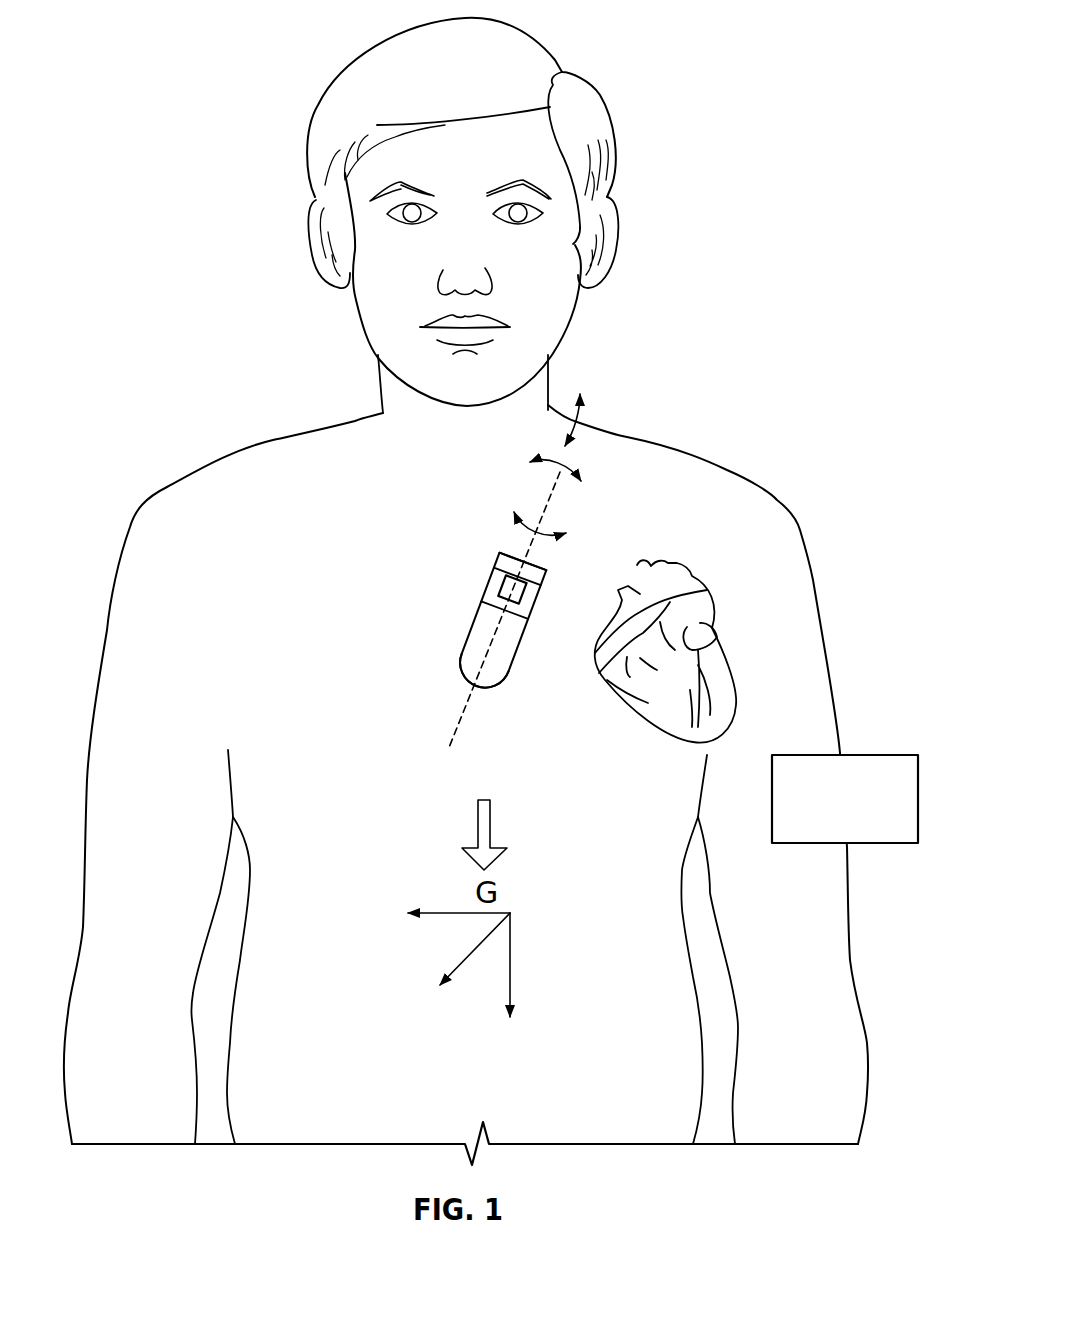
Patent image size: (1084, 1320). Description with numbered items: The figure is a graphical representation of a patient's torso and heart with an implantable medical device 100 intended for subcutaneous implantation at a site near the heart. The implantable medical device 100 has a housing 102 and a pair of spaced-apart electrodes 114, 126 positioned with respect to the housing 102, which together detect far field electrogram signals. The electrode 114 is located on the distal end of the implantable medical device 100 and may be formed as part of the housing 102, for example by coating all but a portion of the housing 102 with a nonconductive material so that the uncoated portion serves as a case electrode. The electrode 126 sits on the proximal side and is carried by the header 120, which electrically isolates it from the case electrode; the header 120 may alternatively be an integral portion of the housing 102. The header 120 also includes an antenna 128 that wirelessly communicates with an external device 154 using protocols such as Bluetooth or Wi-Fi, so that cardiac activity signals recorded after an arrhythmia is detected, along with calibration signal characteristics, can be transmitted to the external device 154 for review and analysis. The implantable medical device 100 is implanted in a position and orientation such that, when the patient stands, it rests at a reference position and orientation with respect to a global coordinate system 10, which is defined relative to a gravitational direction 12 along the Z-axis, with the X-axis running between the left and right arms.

The global coordinate system 10 is at (440, 943).
The gravitational direction 12 is at (478, 830).
The implantable medical device 100 is at (510, 618).
The housing 102 is at (499, 624).
The electrode 114 is at (519, 680).
The header 120 is at (505, 582).
The electrode 126 is at (512, 589).
The antenna 128 is at (522, 562).
The external device 154 is at (888, 844).